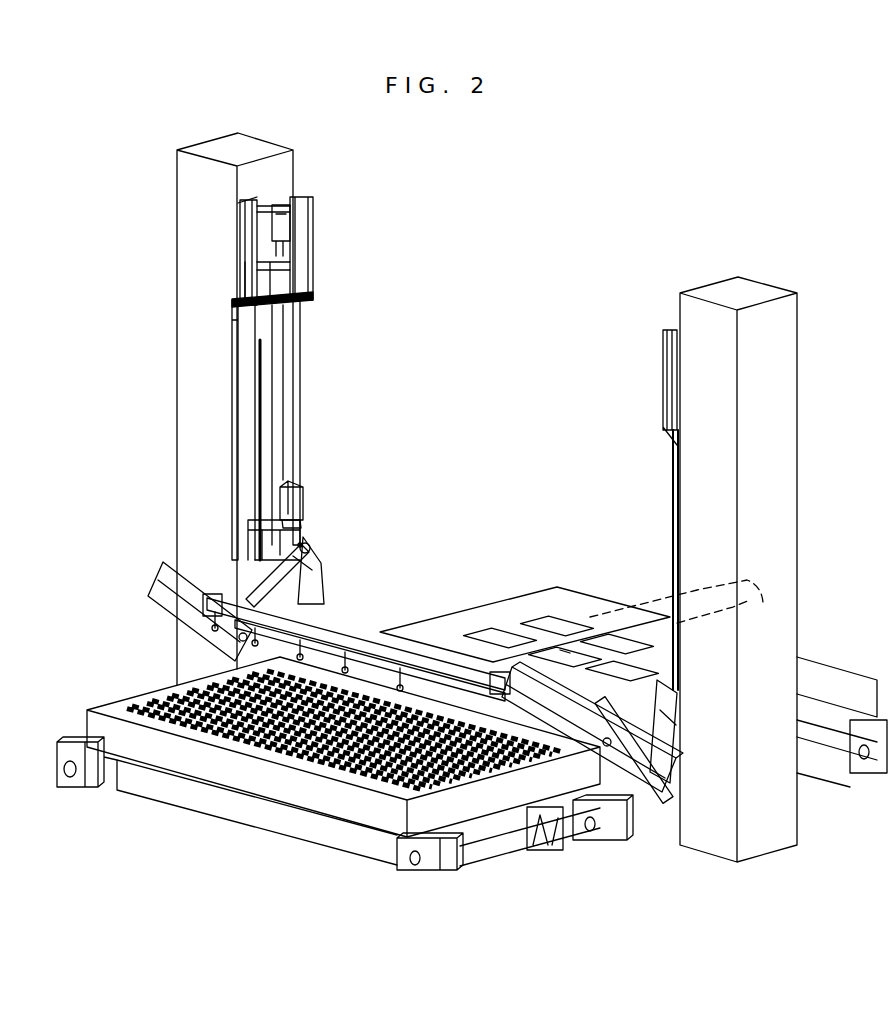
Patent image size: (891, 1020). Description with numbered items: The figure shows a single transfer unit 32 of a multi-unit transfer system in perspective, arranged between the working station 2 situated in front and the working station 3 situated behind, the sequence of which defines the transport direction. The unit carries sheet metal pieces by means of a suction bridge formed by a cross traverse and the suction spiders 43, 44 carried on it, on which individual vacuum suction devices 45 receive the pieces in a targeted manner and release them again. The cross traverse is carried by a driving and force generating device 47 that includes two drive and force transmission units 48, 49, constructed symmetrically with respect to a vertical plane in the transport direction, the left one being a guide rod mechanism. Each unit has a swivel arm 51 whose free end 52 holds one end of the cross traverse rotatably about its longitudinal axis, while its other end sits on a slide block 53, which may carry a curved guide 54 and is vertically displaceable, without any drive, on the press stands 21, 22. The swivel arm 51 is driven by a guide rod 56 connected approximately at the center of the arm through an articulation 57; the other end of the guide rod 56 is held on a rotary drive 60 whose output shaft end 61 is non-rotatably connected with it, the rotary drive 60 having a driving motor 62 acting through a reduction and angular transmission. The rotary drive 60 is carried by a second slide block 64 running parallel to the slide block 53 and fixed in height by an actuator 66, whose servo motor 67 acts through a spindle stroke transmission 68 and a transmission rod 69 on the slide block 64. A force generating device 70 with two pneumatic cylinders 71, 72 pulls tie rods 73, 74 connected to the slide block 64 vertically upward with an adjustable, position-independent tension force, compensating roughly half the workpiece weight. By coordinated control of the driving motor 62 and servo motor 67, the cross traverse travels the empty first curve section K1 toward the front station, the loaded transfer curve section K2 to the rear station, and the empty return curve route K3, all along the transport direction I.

The working station 2 is at (107, 665).
The working station 3 is at (493, 547).
The press stand 21 is at (222, 152).
The press stand 22 is at (783, 348).
The transfer unit 32 is at (546, 297).
The suction spider 43 is at (308, 590).
The suction spider 44 is at (422, 640).
The vacuum suction devices 45 is at (400, 690).
The driving and force generating device 47 is at (508, 392).
The drive and force transmission unit 48 is at (348, 450).
The drive and force transmission unit 49 is at (645, 595).
The swivel arm 51 is at (170, 580).
The free end 52 is at (153, 550).
The slide block 53 is at (303, 578).
The curved guide 54 is at (330, 620).
The guide rod 56 is at (277, 578).
The articulation 57 is at (316, 600).
The rotary drive 60 is at (328, 502).
The shaft end 61 is at (308, 546).
The driving motor 62 is at (296, 493).
The slide block 64 is at (250, 523).
The actuator 66 is at (279, 186).
The servo motor 67 is at (297, 215).
The spindle stroke transmission 68 is at (303, 305).
The transmission rod 69 is at (276, 443).
The force generating device 70 is at (478, 400).
The pneumatic cylinder 71 is at (252, 257).
The pneumatic cylinder 72 is at (313, 283).
The tie rod 73 is at (255, 328).
The tie rod 74 is at (300, 373).
The direction of transfer I is at (605, 482).
The first curve section K1 is at (597, 652).
The transfer curve section K2 is at (612, 605).
The curve route K3 is at (720, 605).